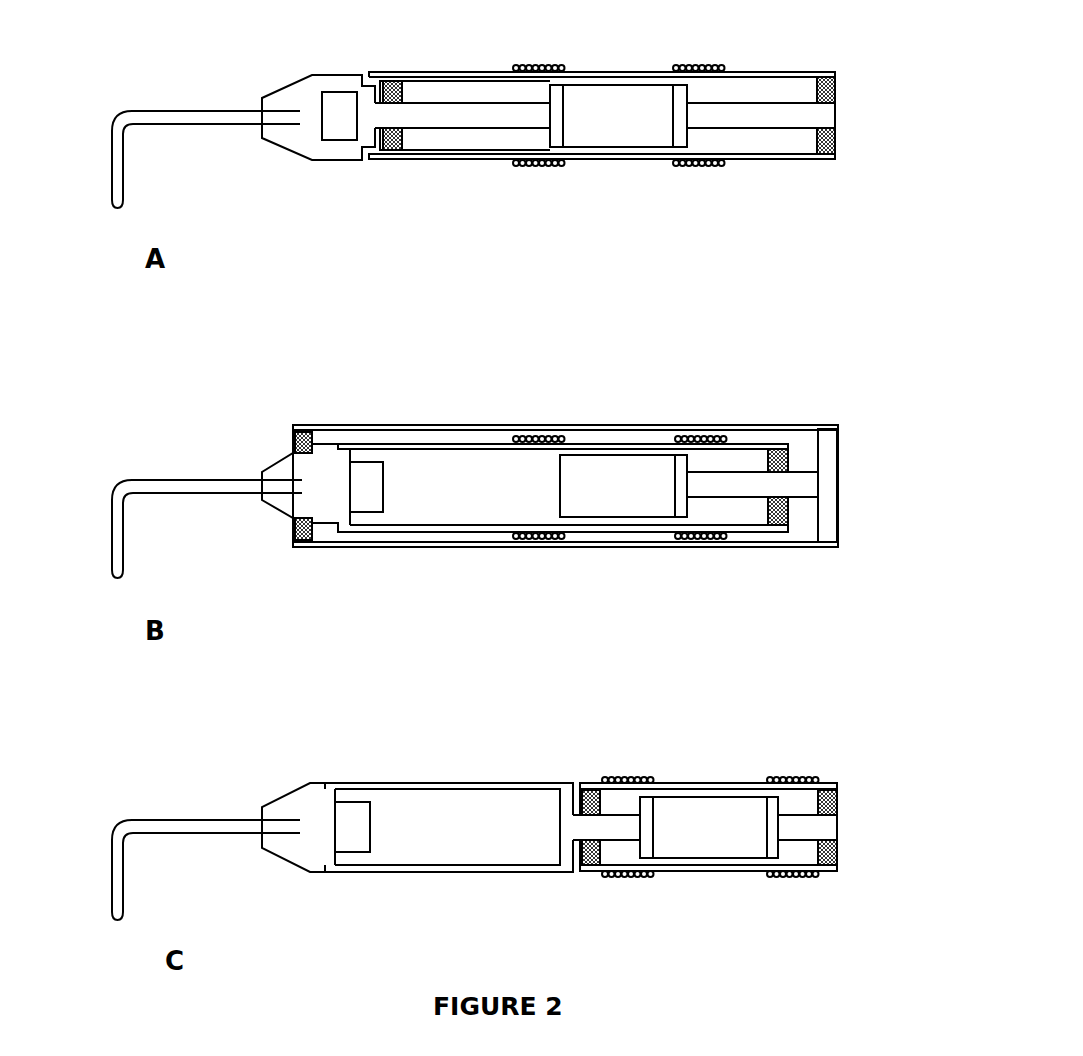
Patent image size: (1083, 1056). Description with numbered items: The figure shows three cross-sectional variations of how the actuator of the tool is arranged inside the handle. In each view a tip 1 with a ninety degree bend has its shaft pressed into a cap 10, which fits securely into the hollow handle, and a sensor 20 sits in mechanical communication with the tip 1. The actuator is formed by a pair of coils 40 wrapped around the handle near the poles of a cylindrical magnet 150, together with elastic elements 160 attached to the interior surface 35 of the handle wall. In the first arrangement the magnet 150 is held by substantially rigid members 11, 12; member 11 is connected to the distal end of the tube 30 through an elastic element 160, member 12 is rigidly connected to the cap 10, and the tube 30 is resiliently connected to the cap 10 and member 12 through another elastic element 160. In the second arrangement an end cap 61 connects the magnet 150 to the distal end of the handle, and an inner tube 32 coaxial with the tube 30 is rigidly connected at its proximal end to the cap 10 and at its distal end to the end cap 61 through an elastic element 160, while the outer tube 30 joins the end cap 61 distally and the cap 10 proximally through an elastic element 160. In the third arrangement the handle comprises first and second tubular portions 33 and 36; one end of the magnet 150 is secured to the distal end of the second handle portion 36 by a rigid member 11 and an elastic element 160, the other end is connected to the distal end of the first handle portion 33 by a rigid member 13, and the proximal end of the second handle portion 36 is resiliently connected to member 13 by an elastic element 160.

In FIG. 2A, the tip 1 is at (113, 129).
In FIG. 2B, the tip 1 is at (113, 498).
In FIG. 2C, the tip 1 is at (113, 838).
In FIG. 2A, the cap 10 is at (283, 88).
In FIG. 2B, the cap 10 is at (263, 470).
In FIG. 2C, the cap 10 is at (273, 800).
In FIG. 2A, the substantially rigid member 11 is at (730, 102).
In FIG. 2C, the substantially rigid member 11 is at (838, 828).
In FIG. 2A, the substantially rigid member 12 is at (565, 100).
In FIG. 2C, the substantially rigid member 13 is at (558, 826).
In FIG. 2A, the sensor 20 is at (332, 92).
In FIG. 2B, the sensor 20 is at (387, 477).
In FIG. 2C, the sensor 20 is at (370, 820).
In FIG. 2A, the tube 30 is at (804, 71).
In FIG. 2B, the tube 30 is at (590, 425).
In FIG. 2B, the inner tube 32 is at (463, 443).
In FIG. 2C, the first tubular portion 33 is at (435, 783).
In FIG. 2A, the interior surface 35 is at (793, 150).
In FIG. 2C, the second tubular portion 36 is at (692, 783).
In FIG. 2A, the coils 40 is at (528, 65).
In FIG. 2B, the coils 40 is at (722, 438).
In FIG. 2C, the coils 40 is at (788, 774).
In FIG. 2B, the end cap 61 is at (838, 487).
In FIG. 2A, the magnet 150 is at (614, 150).
In FIG. 2B, the magnet 150 is at (560, 505).
In FIG. 2C, the magnet 150 is at (705, 858).
In FIG. 2A, the elastic element 160 is at (403, 92).
In FIG. 2B, the elastic element 160 is at (292, 440).
In FIG. 2C, the elastic element 160 is at (838, 803).